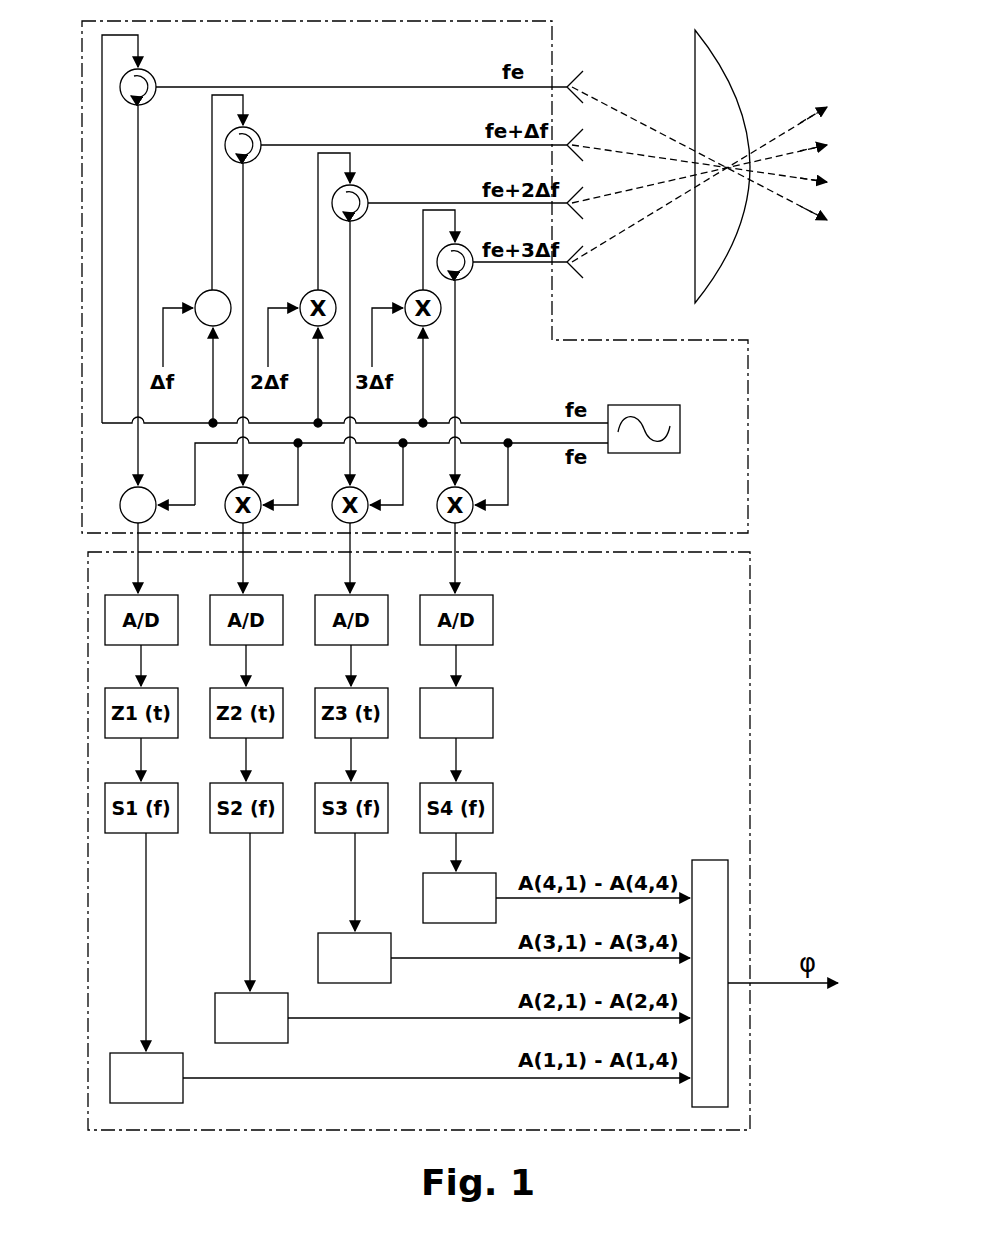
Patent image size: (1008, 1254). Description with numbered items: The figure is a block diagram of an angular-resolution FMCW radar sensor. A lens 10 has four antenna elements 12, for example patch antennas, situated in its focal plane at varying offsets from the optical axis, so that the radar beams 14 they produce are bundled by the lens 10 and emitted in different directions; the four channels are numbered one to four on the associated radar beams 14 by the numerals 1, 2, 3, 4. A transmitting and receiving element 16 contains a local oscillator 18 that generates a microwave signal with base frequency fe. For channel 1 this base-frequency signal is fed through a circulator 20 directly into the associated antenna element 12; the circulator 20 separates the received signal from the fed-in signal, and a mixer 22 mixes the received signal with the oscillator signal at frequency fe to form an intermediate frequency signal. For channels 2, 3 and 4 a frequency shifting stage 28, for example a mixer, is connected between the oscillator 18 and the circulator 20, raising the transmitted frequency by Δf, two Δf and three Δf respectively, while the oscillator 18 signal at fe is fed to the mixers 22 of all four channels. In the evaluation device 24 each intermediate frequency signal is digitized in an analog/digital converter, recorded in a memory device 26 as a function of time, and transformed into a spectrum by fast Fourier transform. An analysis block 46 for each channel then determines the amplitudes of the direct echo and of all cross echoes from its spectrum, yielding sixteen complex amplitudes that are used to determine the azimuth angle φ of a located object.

The channel 1 is at (826, 221).
The channel 2 is at (826, 184).
The channel 3 is at (826, 149).
The channel 4 is at (826, 110).
The lens 10 is at (722, 70).
The antenna elements 12 is at (573, 69).
The radar beams 14 is at (782, 130).
The transmitting and receiving element 16 is at (750, 398).
The local oscillator 18 is at (682, 447).
The circulator 20 is at (150, 79).
The mixer 22 is at (126, 492).
The evaluation device 24 is at (750, 622).
The memory device 26 is at (495, 708).
The frequency shifting stage 28 is at (200, 294).
The analysis block 46 is at (183, 1092).